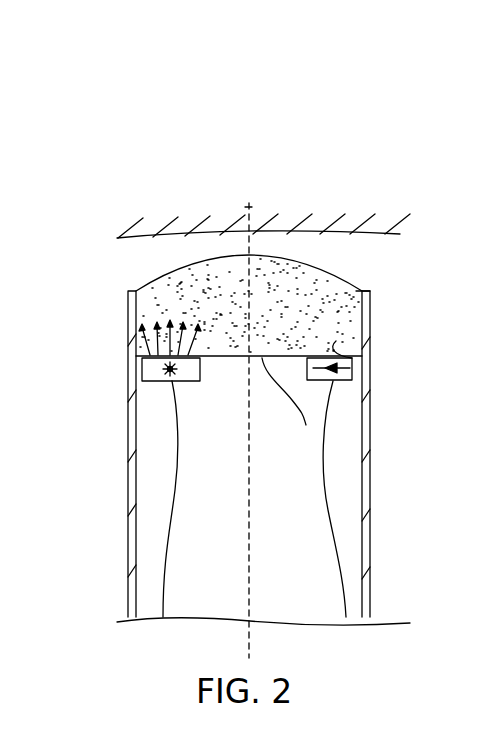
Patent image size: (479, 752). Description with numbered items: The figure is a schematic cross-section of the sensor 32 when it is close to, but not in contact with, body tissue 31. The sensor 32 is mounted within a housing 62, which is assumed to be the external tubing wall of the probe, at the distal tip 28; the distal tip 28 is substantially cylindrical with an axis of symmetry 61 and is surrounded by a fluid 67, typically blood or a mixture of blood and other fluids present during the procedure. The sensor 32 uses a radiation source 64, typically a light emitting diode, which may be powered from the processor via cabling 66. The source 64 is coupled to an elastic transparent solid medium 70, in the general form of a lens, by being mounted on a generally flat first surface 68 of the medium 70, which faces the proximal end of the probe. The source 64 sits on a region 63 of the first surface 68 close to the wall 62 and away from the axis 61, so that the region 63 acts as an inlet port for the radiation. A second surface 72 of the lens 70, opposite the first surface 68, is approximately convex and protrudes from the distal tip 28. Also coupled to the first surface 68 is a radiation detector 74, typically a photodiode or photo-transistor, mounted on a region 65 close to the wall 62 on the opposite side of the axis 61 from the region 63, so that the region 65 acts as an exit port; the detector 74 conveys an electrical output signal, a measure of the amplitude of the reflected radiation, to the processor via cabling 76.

The distal tip 28 is at (127, 390).
The body tissue 31 is at (355, 229).
The sensor 32 is at (138, 291).
The axis of symmetry 61 is at (252, 207).
The housing 62 is at (128, 497).
The region 63 is at (145, 330).
The radiation source 64 is at (185, 382).
The region 65 is at (352, 358).
The cabling 66 is at (174, 503).
The fluid 67 is at (137, 261).
The first surface 68 is at (290, 407).
The elastic transparent solid medium 70 is at (342, 310).
The second surface 72 is at (345, 280).
The radiation detector 74 is at (355, 382).
The cabling 76 is at (338, 541).